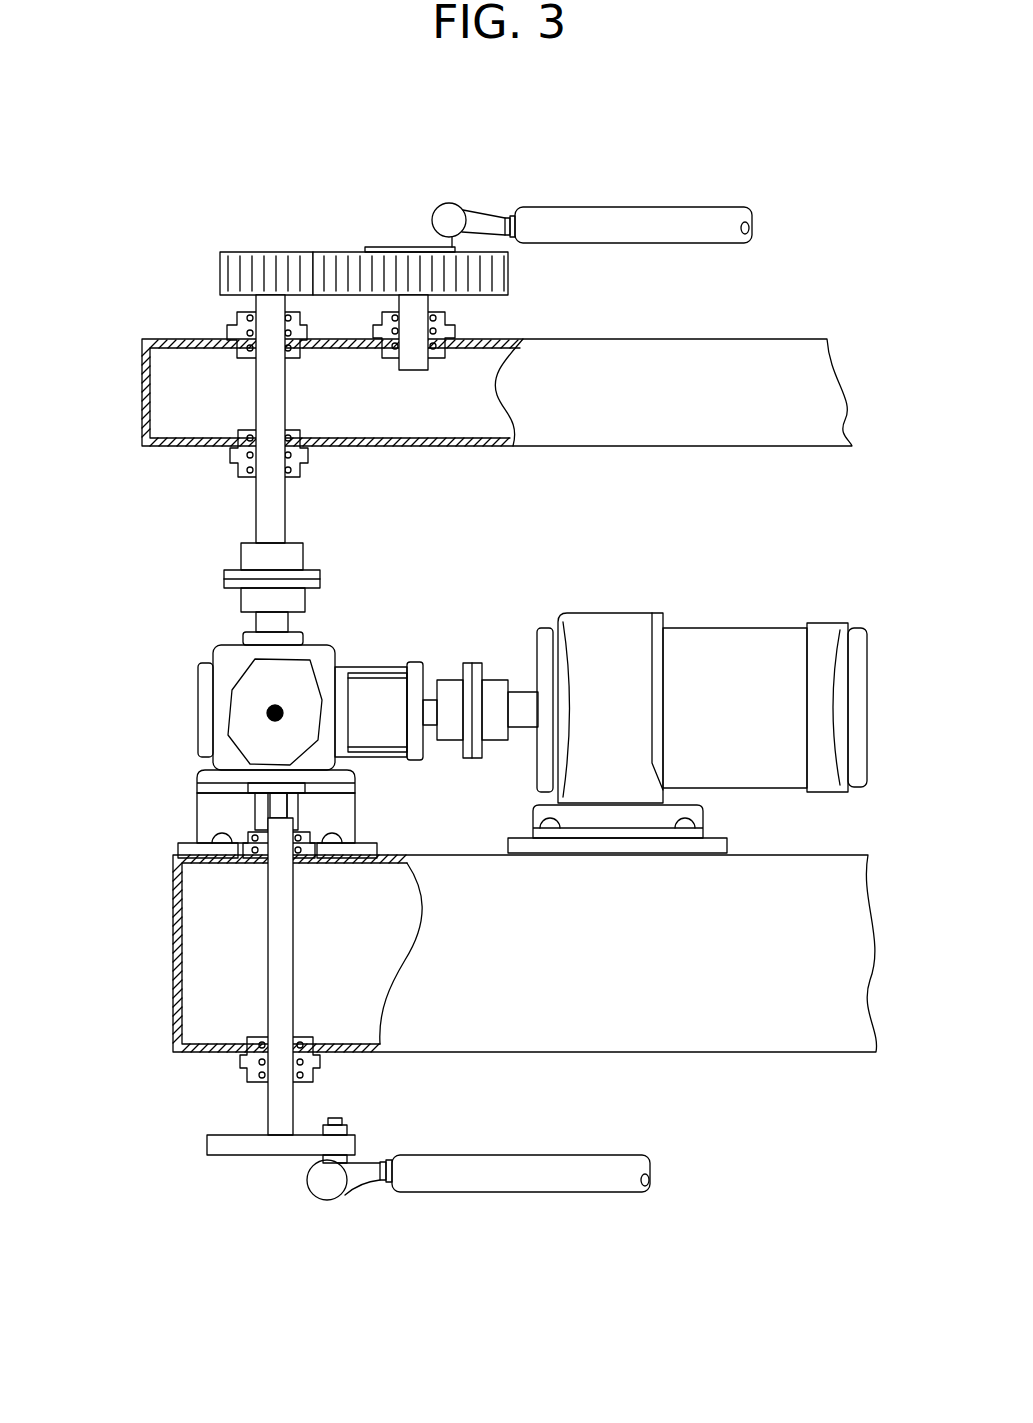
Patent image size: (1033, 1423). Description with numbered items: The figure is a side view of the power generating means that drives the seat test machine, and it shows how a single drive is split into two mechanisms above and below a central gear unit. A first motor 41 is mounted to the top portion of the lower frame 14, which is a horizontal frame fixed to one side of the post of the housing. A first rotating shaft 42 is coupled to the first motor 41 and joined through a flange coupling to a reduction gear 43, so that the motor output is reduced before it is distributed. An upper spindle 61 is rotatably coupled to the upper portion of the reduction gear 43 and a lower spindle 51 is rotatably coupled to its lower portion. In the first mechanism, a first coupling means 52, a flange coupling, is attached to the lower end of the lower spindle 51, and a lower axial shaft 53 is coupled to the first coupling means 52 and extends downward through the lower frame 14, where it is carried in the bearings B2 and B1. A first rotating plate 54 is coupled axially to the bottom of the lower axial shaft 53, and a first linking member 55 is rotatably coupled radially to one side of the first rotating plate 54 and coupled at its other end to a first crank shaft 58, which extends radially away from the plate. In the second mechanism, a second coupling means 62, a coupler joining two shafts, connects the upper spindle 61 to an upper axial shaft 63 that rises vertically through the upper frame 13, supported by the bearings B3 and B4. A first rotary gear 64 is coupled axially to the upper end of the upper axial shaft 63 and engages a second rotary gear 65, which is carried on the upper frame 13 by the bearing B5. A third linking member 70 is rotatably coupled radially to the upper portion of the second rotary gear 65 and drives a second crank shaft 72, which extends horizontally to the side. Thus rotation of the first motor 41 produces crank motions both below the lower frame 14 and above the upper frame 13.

The upper frame 13 is at (140, 402).
The lower frame 14 is at (172, 958).
The first motor 41 is at (735, 650).
The first rotating shaft 42 is at (523, 700).
The reduction gear 43 is at (198, 708).
The lower spindle 51 is at (270, 808).
The first coupling means 52 is at (293, 810).
The lower axial shaft 53 is at (273, 1000).
The first rotating plate 54 is at (238, 1147).
The first linking member 55 is at (330, 1190).
The first crank shaft 58 is at (508, 1177).
The upper spindle 61 is at (260, 620).
The second coupling means 62 is at (222, 575).
The upper axial shaft 63 is at (257, 505).
The first rotary gear 64 is at (265, 263).
The second rotary gear 65 is at (353, 263).
The third linking member 70 is at (450, 213).
The second crank shaft 72 is at (623, 218).
The bearing B1 is at (238, 1060).
The bearing B2 is at (247, 850).
The bearing B3 is at (305, 457).
The bearing B4 is at (230, 333).
The bearing B5 is at (455, 328).